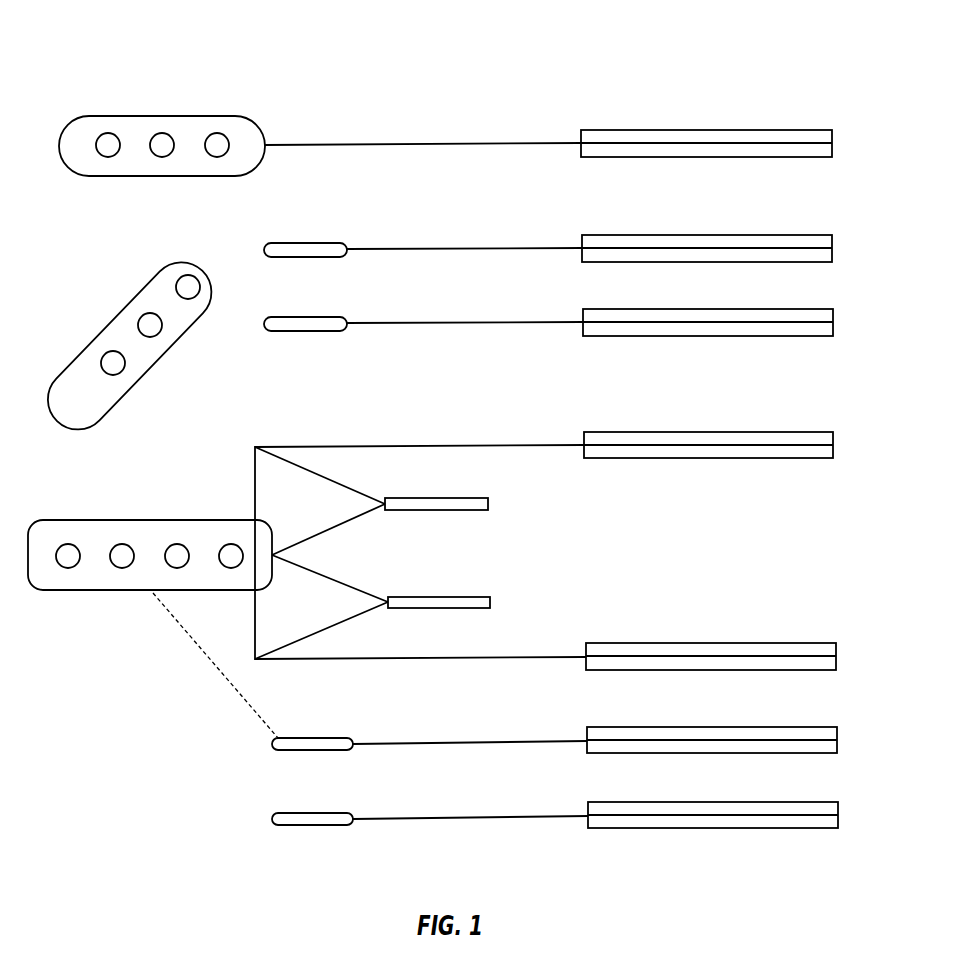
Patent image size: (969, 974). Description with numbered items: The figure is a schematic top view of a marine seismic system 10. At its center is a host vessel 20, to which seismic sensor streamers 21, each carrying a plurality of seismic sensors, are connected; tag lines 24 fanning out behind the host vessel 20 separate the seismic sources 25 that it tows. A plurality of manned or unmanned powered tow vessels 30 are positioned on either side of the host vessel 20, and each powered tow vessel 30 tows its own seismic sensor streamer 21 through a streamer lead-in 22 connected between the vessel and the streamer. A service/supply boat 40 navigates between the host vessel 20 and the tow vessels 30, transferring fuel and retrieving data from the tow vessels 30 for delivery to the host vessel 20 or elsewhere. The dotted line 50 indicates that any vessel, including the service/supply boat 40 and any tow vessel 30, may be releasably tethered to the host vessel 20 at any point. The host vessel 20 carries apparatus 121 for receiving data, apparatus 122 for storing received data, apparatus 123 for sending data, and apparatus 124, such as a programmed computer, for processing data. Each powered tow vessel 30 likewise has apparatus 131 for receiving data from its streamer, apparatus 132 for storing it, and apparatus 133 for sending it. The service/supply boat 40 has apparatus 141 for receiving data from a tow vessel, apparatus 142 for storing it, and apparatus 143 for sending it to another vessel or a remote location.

The marine seismic system 10 is at (747, 42).
The host vessel 20 is at (80, 593).
The seismic sensor streamer 21 is at (706, 130).
The streamer lead-in 22 is at (440, 143).
The tag line 24 is at (340, 623).
The seismic source 25 is at (440, 497).
The powered tow vessel 30 is at (237, 117).
The service/supply boat 40 is at (175, 343).
The dotted line 50 is at (203, 650).
The apparatus for receiving data 121 is at (68, 544).
The apparatus for storing received data 122 is at (122, 544).
The apparatus for sending data 123 is at (177, 544).
The apparatus for processing data 124 is at (231, 544).
The apparatus for receiving data 131 is at (107, 133).
The apparatus for storing received data 132 is at (162, 133).
The apparatus for sending data 133 is at (217, 133).
The apparatus for receiving data 141 is at (108, 352).
The apparatus for storing received data 142 is at (145, 314).
The apparatus for sending data 143 is at (184, 276).